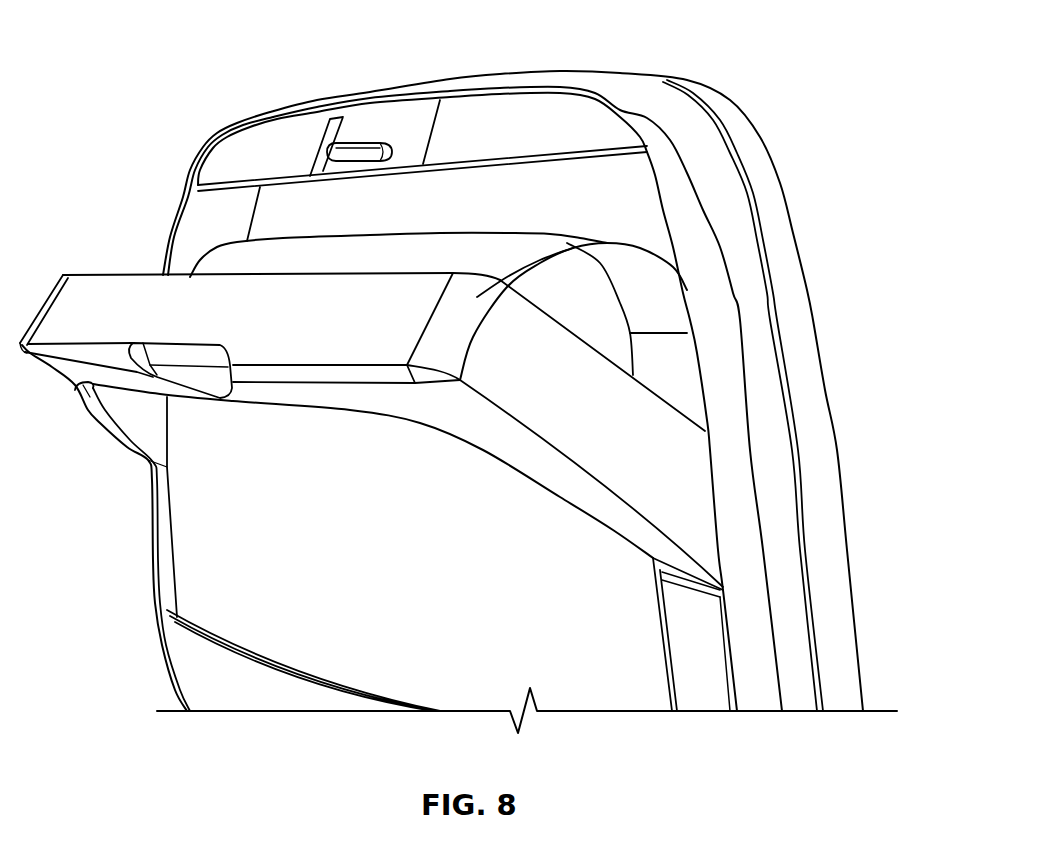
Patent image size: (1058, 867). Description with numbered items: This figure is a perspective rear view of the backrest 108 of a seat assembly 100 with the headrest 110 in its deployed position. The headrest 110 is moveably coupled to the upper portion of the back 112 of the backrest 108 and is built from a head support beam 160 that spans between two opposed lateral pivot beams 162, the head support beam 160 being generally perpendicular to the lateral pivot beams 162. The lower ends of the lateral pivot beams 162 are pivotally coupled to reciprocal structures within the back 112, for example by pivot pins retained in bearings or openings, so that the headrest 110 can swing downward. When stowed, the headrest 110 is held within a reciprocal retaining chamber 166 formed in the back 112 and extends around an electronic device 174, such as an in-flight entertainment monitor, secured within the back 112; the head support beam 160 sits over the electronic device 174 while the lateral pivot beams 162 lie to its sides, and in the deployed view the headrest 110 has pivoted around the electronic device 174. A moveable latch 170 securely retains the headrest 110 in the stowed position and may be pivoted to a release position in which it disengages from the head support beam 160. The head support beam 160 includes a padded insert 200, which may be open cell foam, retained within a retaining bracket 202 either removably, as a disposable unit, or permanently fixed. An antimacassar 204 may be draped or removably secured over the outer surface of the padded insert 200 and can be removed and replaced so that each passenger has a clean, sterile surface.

The seat assembly 100 is at (601, 56).
The backrest 108 is at (782, 182).
The headrest 110 is at (616, 402).
The back 112 is at (647, 110).
The head support beam 160 is at (454, 300).
The lateral pivot beams 162 is at (683, 452).
The retaining chamber 166 is at (627, 197).
The latch 170 is at (355, 148).
The electronic device 174 is at (509, 252).
The padded insert 200 is at (607, 243).
The retaining bracket 202 is at (410, 395).
The antimacassar 204 is at (127, 305).